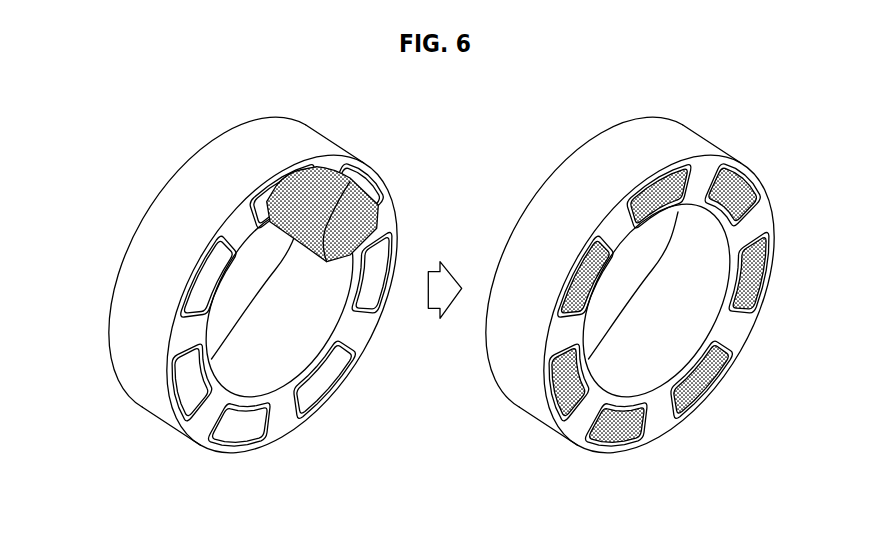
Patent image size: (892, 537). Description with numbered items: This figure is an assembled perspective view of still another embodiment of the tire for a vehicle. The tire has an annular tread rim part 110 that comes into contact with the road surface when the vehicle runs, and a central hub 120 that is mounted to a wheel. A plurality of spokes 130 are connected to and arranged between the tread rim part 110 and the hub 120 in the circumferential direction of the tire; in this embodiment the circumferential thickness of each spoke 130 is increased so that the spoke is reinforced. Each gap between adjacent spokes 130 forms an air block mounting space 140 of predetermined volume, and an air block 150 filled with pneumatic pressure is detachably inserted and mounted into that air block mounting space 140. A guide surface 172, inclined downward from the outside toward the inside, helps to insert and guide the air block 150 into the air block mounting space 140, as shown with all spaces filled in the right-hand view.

The tread rim part 110 is at (151, 237).
The hub 120 is at (325, 307).
The spoke 130 is at (237, 222).
The air block mounting space 140 is at (265, 190).
The air block 150 is at (347, 184).
The guide surface 172 is at (687, 173).